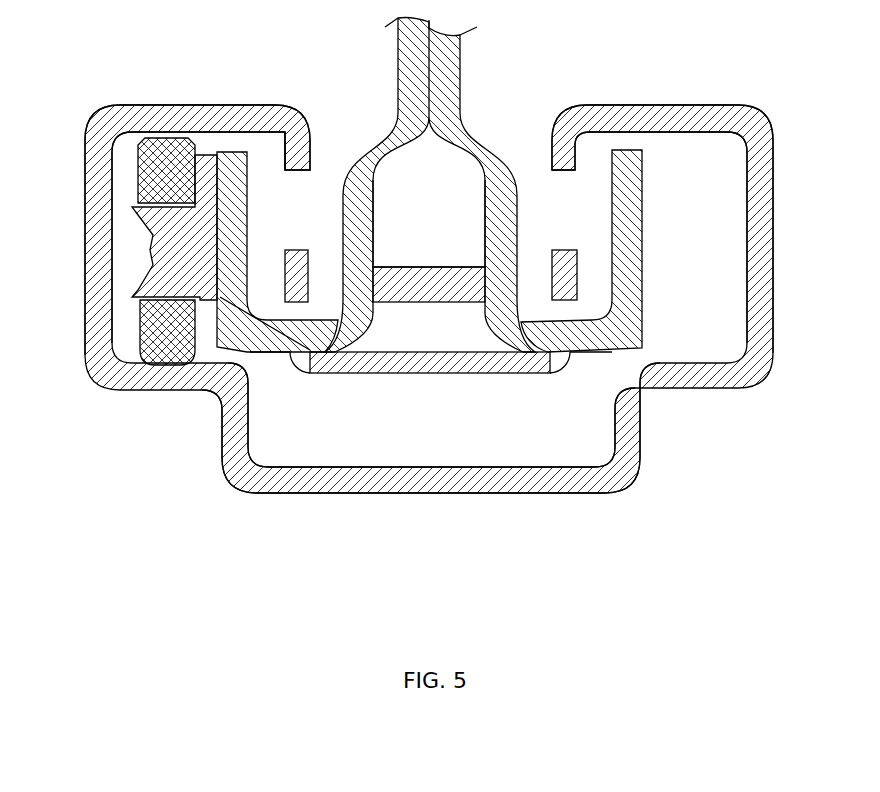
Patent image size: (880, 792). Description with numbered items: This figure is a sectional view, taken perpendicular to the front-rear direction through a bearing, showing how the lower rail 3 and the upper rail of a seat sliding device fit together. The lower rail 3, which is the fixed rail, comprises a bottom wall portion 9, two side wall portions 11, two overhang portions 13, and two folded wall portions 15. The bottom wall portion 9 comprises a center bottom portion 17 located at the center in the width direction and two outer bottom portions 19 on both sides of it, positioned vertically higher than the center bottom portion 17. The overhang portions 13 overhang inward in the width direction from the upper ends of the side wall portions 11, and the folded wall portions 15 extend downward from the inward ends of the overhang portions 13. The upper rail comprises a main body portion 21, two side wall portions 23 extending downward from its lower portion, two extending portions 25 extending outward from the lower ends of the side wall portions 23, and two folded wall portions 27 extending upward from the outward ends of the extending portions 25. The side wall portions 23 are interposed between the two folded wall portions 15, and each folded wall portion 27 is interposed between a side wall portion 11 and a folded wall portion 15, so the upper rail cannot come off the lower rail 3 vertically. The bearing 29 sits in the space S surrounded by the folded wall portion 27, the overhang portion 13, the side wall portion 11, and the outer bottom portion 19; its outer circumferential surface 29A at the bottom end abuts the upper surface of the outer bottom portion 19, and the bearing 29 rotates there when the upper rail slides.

The lower rail 3 is at (755, 112).
The bottom wall portion 9 is at (424, 488).
The side wall portion 11 is at (85, 228).
The overhang portion 13 is at (195, 104).
The folded wall portion 15 is at (318, 248).
The center bottom portion 17 is at (300, 560).
The outer bottom portion 19 is at (183, 390).
The main body portion 21 is at (460, 62).
The side wall portion 23 is at (373, 213).
The extending portion 25 is at (270, 352).
The folded wall portion 27 is at (247, 208).
The bearing 29 is at (119, 313).
The outer circumferential surface 29A is at (148, 378).
The space S is at (265, 160).